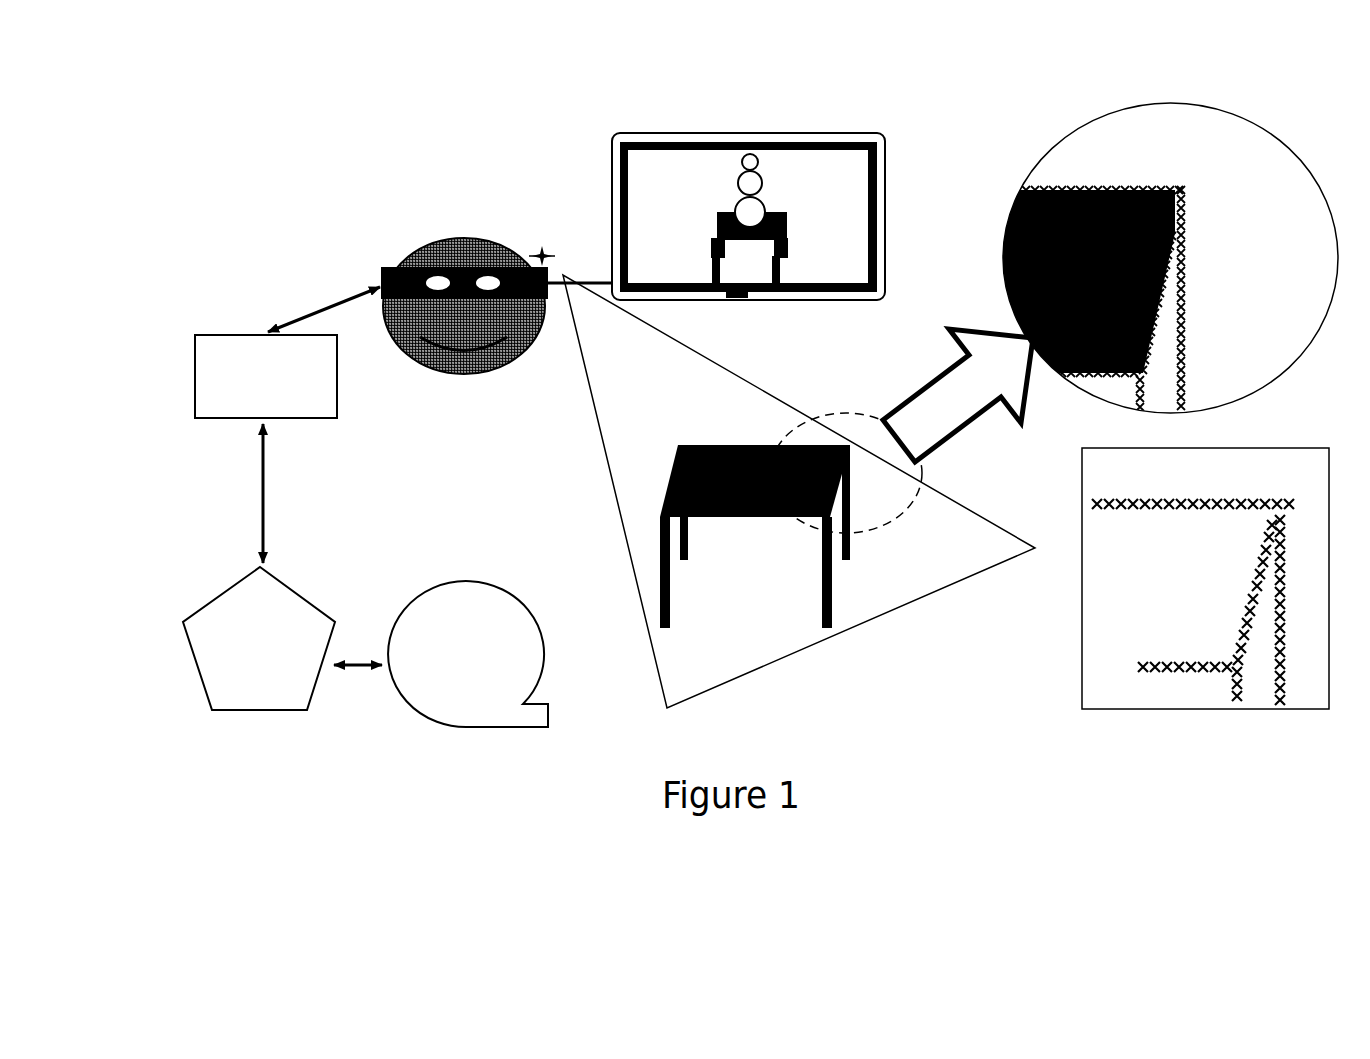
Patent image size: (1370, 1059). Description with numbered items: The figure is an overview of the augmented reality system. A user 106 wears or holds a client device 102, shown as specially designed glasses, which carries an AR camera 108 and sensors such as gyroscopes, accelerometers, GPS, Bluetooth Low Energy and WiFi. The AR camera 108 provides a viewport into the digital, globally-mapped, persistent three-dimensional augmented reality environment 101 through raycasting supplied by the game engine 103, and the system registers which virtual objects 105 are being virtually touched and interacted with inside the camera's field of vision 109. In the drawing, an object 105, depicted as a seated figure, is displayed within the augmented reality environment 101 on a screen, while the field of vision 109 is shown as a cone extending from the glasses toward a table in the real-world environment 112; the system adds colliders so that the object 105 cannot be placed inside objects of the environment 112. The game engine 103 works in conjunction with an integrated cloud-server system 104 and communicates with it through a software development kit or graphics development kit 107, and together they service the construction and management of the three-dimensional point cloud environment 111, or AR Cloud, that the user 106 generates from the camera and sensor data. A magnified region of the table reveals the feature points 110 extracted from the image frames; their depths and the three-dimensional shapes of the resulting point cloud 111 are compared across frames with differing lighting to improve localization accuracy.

The augmented reality environment 101 is at (748, 202).
The client device 102 is at (387, 262).
The game engine 103 is at (266, 360).
The cloud-server system 104 is at (462, 650).
The object 105 is at (730, 218).
The user 106 is at (463, 398).
The software development kit (SDK) / graphics development kit (GDK) 107 is at (250, 638).
The AR camera 108 is at (546, 228).
The field of vision 109 is at (799, 491).
The feature points 110 is at (1187, 292).
The 3D point cloud environment 111 is at (1080, 584).
The environment 112 is at (843, 606).